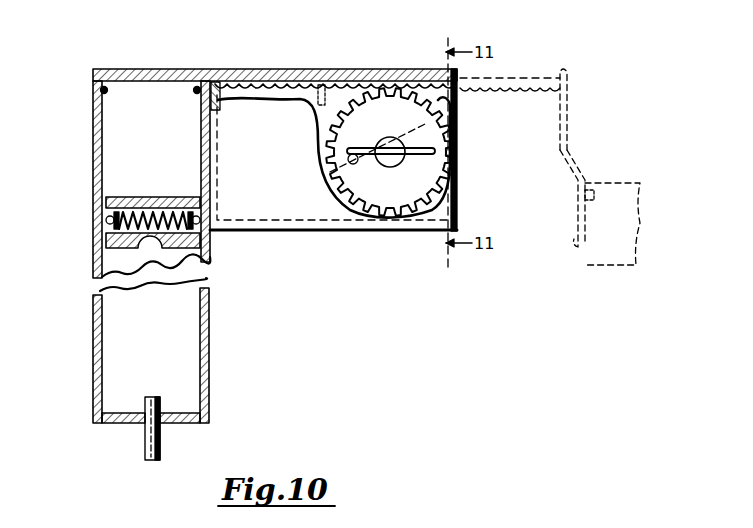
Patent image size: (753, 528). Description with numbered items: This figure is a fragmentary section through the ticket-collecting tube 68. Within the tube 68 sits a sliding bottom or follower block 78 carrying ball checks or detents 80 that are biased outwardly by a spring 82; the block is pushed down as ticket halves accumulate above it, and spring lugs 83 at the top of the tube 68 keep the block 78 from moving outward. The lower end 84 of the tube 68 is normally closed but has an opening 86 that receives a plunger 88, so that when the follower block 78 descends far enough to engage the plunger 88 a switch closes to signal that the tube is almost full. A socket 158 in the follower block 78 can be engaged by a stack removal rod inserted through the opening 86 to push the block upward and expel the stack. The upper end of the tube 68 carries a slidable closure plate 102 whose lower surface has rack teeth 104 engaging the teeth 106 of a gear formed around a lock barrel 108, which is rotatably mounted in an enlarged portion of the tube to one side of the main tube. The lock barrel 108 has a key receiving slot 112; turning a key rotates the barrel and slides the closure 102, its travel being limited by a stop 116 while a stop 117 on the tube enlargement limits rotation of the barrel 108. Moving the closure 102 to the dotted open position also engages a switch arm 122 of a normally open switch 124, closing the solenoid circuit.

The slidable closure plate 102 is at (147, 68).
The stop 116 is at (256, 82).
The lugs 83 is at (96, 98).
The rack teeth 104 is at (260, 103).
The teeth 106 is at (337, 120).
The key receiving slot 112 is at (455, 163).
The stop 117 is at (336, 174).
The lock barrel 108 is at (383, 199).
The follower block 78 is at (130, 197).
The spring 82 is at (153, 197).
The ball checks 80 is at (108, 220).
The socket 158 is at (146, 250).
The tube 68 is at (208, 334).
The lower end 84 is at (130, 415).
The opening 86 is at (164, 412).
The plunger 88 is at (165, 443).
The switch arm 122 is at (568, 118).
The normally open switch 124 is at (612, 182).